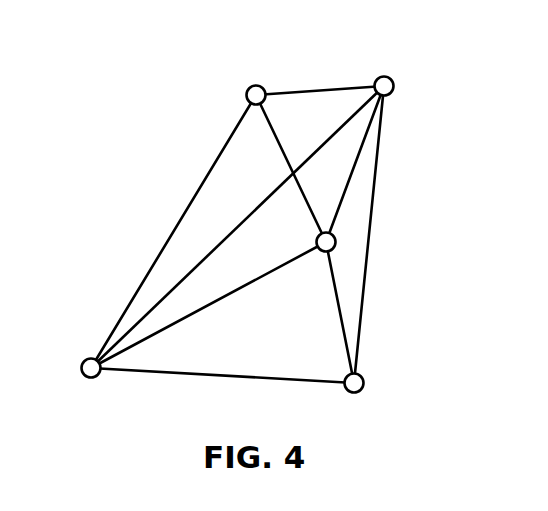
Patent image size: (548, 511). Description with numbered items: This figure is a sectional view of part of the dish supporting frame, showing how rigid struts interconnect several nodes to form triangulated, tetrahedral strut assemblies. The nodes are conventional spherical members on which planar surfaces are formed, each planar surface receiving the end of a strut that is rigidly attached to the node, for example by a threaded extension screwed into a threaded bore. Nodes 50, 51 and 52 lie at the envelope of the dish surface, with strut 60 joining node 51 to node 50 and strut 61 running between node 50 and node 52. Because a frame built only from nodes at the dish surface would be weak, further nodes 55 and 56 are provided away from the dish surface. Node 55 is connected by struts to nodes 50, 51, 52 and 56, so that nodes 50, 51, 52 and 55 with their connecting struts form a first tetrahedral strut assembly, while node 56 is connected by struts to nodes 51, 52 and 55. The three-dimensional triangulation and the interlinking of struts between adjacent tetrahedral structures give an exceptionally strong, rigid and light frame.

The node 50 is at (393, 86).
The node 51 is at (249, 93).
The node 52 is at (84, 361).
The node 55 is at (337, 236).
The node 56 is at (359, 378).
The strut 60 is at (328, 84).
The strut 61 is at (228, 235).